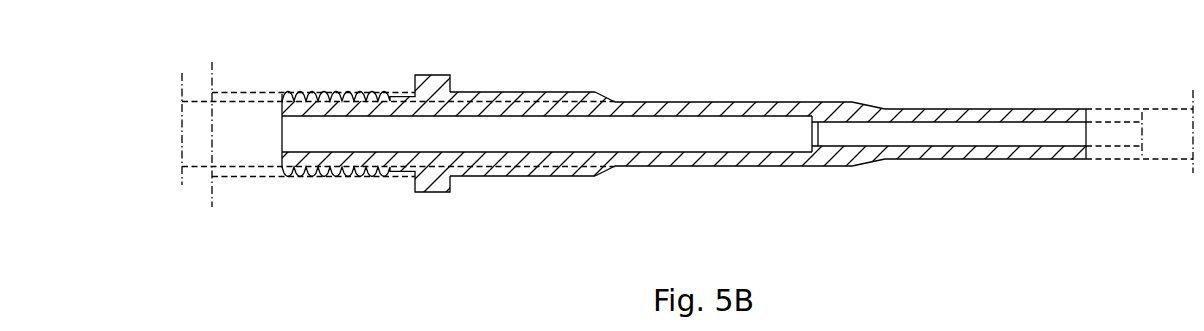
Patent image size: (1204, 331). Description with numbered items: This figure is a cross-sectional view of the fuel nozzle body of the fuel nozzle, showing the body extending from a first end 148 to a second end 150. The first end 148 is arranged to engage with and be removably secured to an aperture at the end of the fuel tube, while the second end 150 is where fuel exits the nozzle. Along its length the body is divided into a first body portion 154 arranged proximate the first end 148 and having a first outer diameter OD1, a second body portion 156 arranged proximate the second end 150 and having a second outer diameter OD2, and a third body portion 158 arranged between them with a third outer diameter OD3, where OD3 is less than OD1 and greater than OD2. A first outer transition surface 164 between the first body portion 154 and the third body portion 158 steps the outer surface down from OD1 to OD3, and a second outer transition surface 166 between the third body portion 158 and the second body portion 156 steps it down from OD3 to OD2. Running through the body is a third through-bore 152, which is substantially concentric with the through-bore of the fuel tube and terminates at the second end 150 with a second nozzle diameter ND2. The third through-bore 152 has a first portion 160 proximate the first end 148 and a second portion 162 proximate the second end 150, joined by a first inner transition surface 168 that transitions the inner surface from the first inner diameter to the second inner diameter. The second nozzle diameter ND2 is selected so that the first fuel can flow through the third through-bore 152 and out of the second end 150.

The first end 148 is at (352, 67).
The second end 150 is at (1043, 195).
The third through-bore 152 is at (668, 145).
The first body portion 154 is at (500, 92).
The second body portion 156 is at (993, 108).
The third body portion 158 is at (740, 101).
The first portion 160 is at (480, 137).
The second portion 162 is at (917, 133).
The first outer transition surface 164 is at (615, 98).
The second outer transition surface 166 is at (882, 106).
The first inner transition surface 168 is at (812, 167).
The first outer diameter OD1 is at (213, 67).
The second outer diameter OD2 is at (1193, 128).
The third outer diameter OD3 is at (182, 135).
The second nozzle diameter ND2 is at (1143, 135).